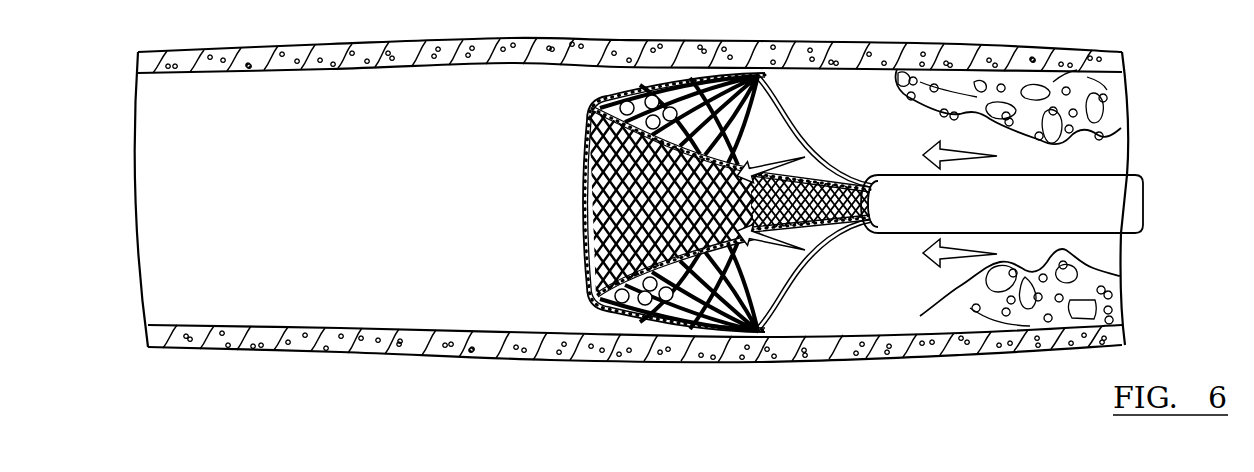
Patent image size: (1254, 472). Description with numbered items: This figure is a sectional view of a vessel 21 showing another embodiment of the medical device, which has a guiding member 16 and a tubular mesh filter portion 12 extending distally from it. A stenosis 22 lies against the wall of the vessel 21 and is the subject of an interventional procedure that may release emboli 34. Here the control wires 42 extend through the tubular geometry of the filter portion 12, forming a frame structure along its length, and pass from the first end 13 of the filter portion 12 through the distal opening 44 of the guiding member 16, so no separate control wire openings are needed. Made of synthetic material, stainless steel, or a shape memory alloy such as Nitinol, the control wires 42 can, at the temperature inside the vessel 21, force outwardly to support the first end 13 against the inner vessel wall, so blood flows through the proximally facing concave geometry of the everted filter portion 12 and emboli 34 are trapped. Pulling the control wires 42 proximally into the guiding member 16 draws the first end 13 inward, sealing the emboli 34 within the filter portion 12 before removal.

The filter portion 12 is at (594, 205).
The first end 13 is at (735, 102).
The guiding member 16 is at (1127, 173).
The vessel 21 is at (977, 58).
The stenosis 22 is at (1053, 90).
The emboli 34 is at (648, 98).
The control wires 42 is at (803, 124).
The distal opening 44 is at (861, 240).